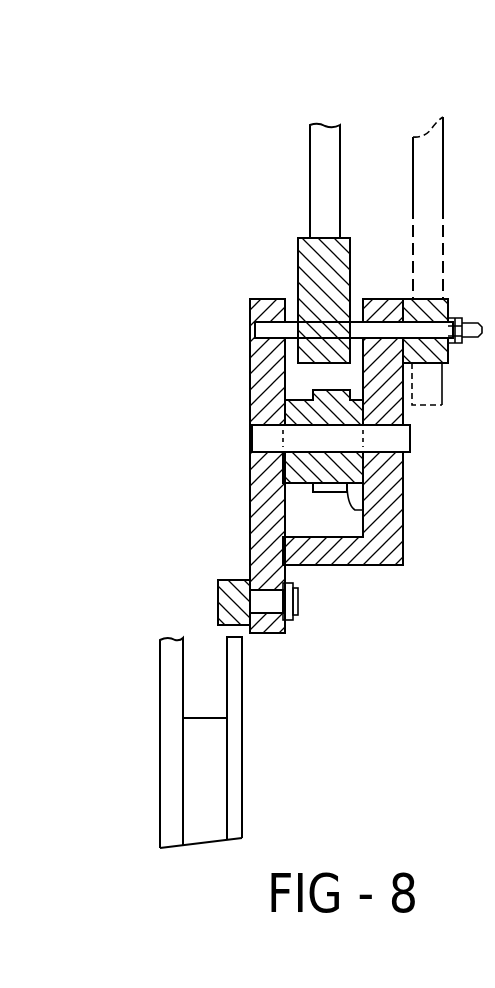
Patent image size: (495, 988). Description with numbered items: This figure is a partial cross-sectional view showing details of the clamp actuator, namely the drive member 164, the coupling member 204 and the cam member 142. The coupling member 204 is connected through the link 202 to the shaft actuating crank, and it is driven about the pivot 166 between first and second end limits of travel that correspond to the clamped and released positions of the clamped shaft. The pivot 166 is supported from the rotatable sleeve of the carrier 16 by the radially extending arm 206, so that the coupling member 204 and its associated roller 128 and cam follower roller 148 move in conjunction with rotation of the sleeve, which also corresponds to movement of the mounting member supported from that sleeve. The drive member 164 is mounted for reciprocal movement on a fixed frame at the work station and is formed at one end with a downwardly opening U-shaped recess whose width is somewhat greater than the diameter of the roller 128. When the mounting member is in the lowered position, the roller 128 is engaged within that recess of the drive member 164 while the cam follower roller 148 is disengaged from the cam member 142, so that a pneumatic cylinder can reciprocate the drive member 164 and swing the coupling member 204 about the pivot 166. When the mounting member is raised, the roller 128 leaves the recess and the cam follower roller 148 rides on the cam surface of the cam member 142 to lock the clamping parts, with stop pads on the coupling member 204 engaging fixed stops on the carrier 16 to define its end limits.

The carrier 16 is at (160, 670).
The roller 128 is at (421, 298).
The cam member 142 is at (242, 735).
The cam follower roller 148 is at (228, 579).
The drive member 164 is at (445, 160).
The pivot 166 is at (394, 455).
The link 202 is at (310, 158).
The coupling member 204 is at (250, 332).
The radially extending arm 206 is at (403, 514).